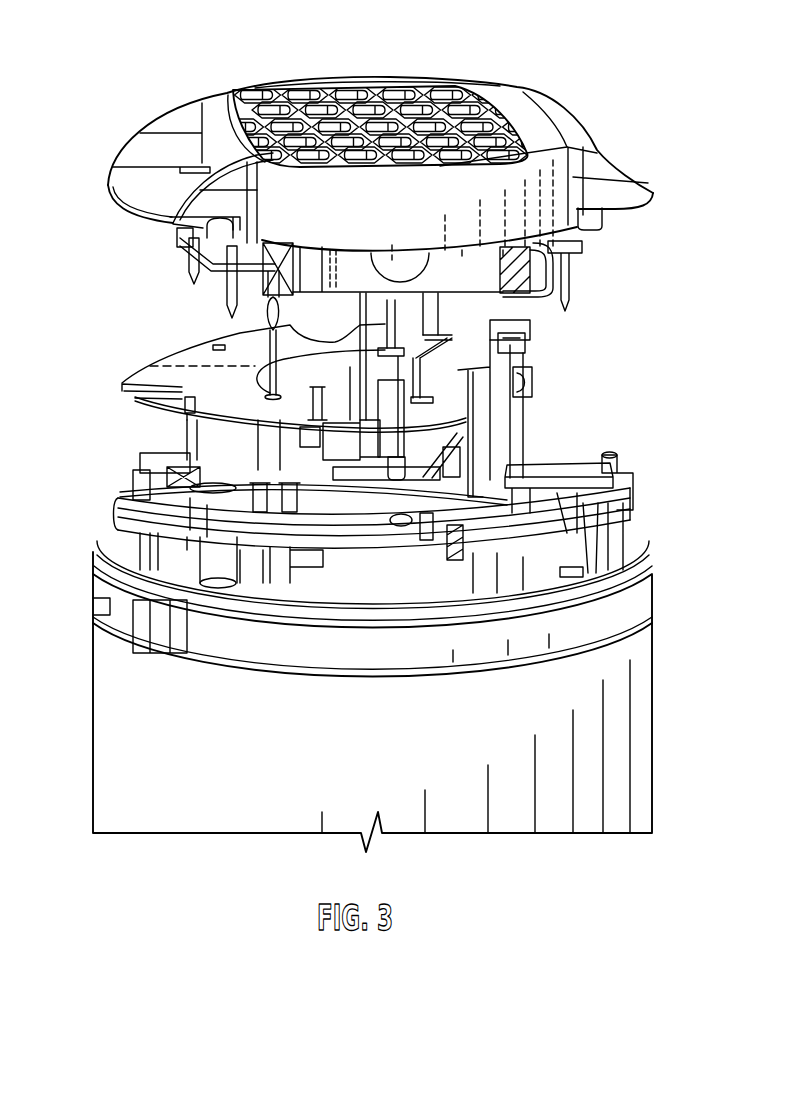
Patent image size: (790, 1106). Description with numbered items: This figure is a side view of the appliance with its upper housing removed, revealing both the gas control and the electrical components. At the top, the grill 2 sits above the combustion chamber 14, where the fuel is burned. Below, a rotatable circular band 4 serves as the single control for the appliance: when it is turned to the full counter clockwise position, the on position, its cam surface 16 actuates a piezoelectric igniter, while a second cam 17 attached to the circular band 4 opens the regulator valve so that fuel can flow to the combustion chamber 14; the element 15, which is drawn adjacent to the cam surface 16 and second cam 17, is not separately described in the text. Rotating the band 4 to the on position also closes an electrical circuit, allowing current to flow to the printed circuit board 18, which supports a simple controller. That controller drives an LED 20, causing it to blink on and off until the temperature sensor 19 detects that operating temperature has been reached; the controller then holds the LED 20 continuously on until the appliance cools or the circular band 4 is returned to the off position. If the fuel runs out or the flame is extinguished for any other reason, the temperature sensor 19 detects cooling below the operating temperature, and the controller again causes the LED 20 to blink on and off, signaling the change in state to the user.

The grill 2 is at (437, 108).
The circular band 4 is at (100, 594).
The combustion chamber 14 is at (477, 278).
The latch cap 15 is at (527, 335).
The cam surface 16 is at (525, 420).
The second cam 17 is at (438, 452).
The printed circuit board 18 is at (192, 352).
The temperature sensor 19 is at (233, 313).
The LED 20 is at (170, 455).